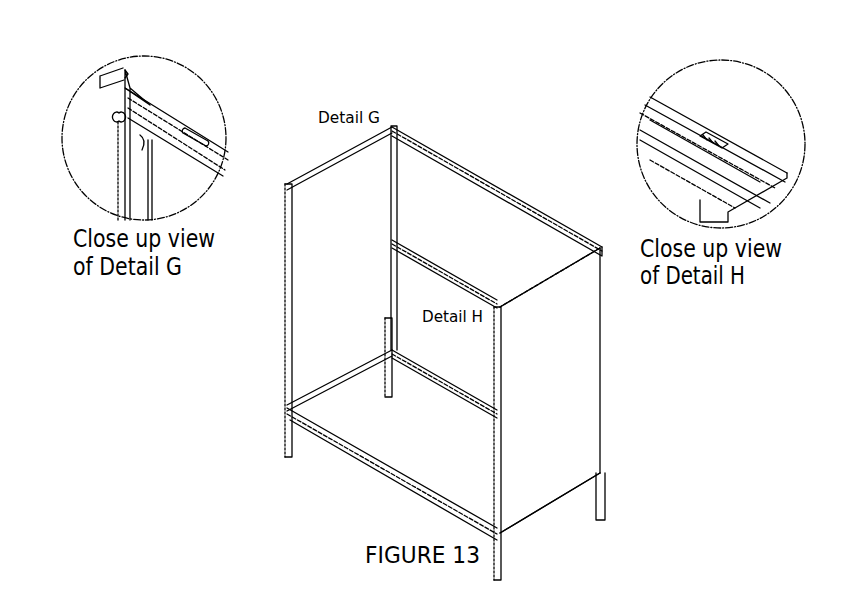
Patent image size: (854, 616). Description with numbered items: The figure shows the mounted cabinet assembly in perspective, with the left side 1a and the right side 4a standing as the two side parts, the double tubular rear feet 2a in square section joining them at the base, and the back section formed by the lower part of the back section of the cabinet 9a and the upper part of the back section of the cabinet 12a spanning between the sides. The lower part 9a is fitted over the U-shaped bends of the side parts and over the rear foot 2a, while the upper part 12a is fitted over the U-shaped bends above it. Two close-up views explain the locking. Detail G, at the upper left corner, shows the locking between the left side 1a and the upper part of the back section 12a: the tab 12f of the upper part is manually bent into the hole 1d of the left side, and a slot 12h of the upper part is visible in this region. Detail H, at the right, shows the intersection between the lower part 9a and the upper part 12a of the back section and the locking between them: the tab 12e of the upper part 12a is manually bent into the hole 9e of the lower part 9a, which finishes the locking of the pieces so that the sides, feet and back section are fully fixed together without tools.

The left side 1a is at (312, 362).
The hole of the left side 1d is at (135, 133).
The upper part of the back section of the cabinet 12a is at (522, 242).
The rail slot 12h is at (198, 135).
The tab 12f is at (147, 143).
The tab 12e is at (715, 135).
The lower part of the back section of the cabinet 9a is at (455, 297).
The hole of the lower part of the back section 9e is at (663, 122).
The rear feet 2a is at (443, 385).
The right side 4a is at (573, 372).